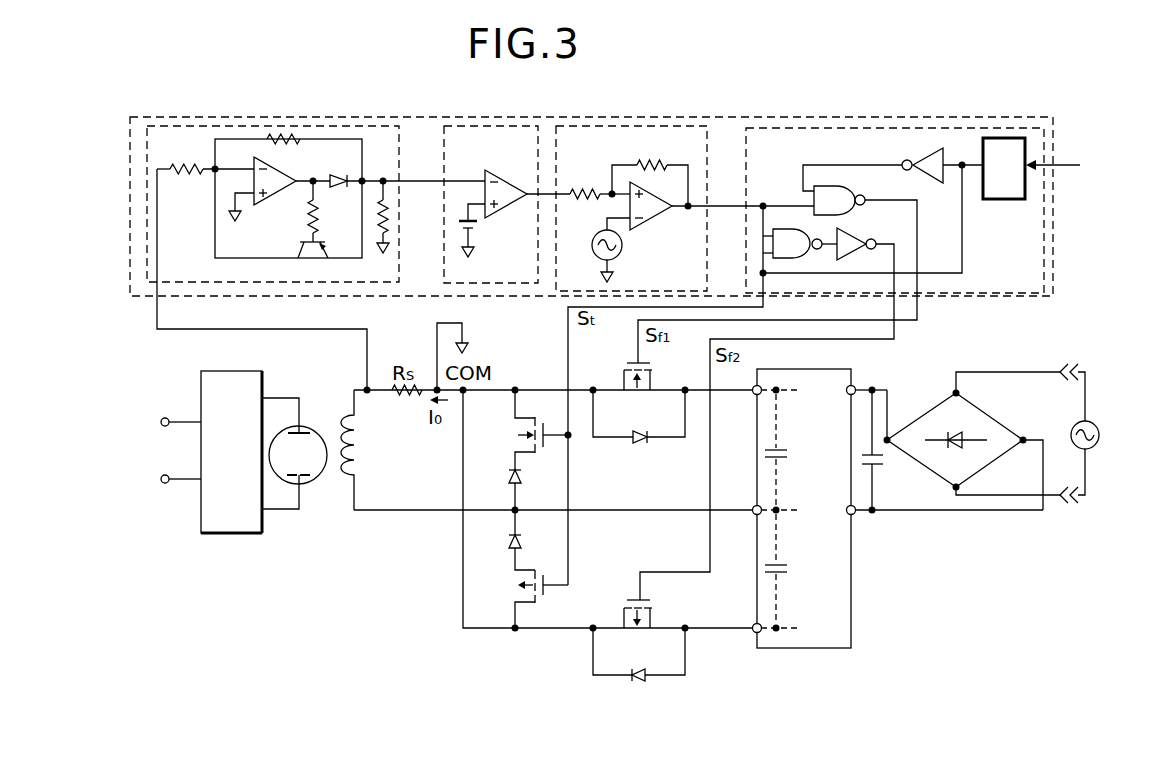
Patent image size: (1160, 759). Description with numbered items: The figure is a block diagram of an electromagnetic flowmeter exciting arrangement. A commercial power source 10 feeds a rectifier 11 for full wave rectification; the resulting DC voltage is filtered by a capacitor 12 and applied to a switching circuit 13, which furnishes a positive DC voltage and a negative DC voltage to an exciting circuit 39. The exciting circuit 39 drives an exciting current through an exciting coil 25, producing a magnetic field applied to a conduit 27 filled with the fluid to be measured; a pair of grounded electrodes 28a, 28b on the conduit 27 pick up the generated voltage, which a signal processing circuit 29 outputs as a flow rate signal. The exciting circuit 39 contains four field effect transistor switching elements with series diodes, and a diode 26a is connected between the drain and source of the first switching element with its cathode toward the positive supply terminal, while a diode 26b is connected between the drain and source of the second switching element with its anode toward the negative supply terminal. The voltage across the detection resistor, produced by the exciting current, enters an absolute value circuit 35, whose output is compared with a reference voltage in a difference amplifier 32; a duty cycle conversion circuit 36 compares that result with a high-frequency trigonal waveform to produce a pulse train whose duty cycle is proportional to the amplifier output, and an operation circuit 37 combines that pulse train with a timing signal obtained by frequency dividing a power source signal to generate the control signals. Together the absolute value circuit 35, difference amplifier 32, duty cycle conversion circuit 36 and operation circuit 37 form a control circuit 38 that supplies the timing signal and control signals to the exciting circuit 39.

The commercial power source 10 is at (1095, 425).
The rectifier 11 is at (993, 417).
The capacitor 12 is at (884, 460).
The switching circuit 13 is at (805, 649).
The exciting coil 25 is at (370, 445).
The diode 26a is at (640, 447).
The diode 26b is at (650, 677).
The conduit 27 is at (304, 451).
The grounded electrode 28a is at (301, 427).
The grounded electrode 28b is at (303, 483).
The signal processing circuit 29 is at (229, 533).
The difference amplifier 32 is at (477, 126).
The absolute value circuit 35 is at (272, 125).
The duty cycle conversion circuit 36 is at (688, 126).
The operation circuit 37 is at (862, 128).
The control circuit 38 is at (1060, 130).
The exciting circuit 39 is at (555, 515).